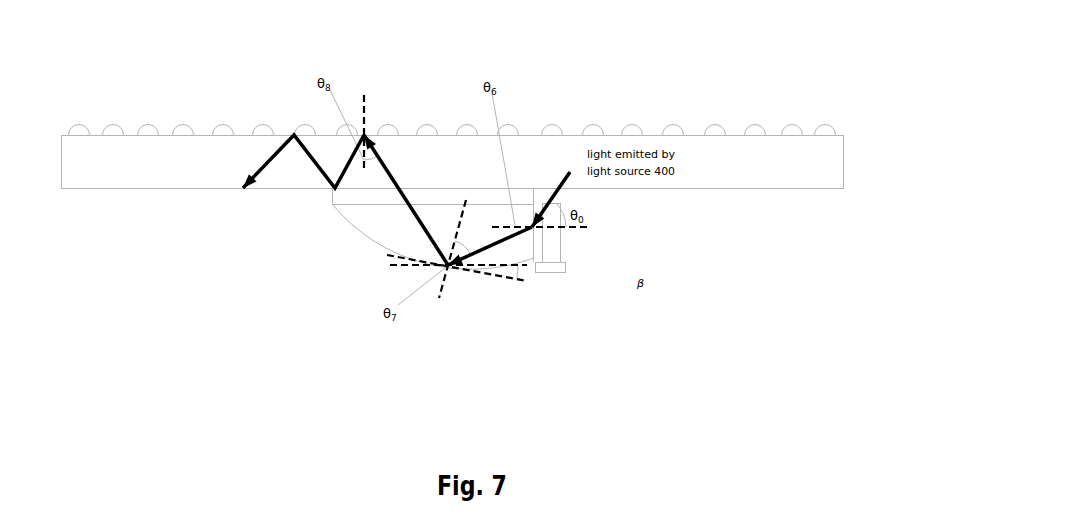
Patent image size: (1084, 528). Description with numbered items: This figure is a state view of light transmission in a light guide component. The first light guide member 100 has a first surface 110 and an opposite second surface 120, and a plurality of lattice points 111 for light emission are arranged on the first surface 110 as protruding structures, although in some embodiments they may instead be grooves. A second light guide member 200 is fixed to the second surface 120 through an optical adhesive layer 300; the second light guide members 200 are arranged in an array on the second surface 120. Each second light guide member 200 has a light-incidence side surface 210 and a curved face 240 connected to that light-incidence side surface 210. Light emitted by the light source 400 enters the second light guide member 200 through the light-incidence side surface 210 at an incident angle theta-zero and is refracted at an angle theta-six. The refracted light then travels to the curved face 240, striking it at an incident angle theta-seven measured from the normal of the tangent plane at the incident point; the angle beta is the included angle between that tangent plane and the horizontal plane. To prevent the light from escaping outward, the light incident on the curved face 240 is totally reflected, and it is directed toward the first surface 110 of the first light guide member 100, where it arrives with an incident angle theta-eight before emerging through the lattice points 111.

The first light guide member 100 is at (818, 164).
The first surface 110 is at (692, 135).
The lattice points 111 is at (465, 130).
The second surface 120 is at (710, 190).
The second light guide member 200 is at (408, 220).
The light-incidence side surface 210 is at (532, 237).
The curved face 240 is at (373, 243).
The optical adhesive layer 300 is at (360, 193).
The light source 400 is at (555, 245).